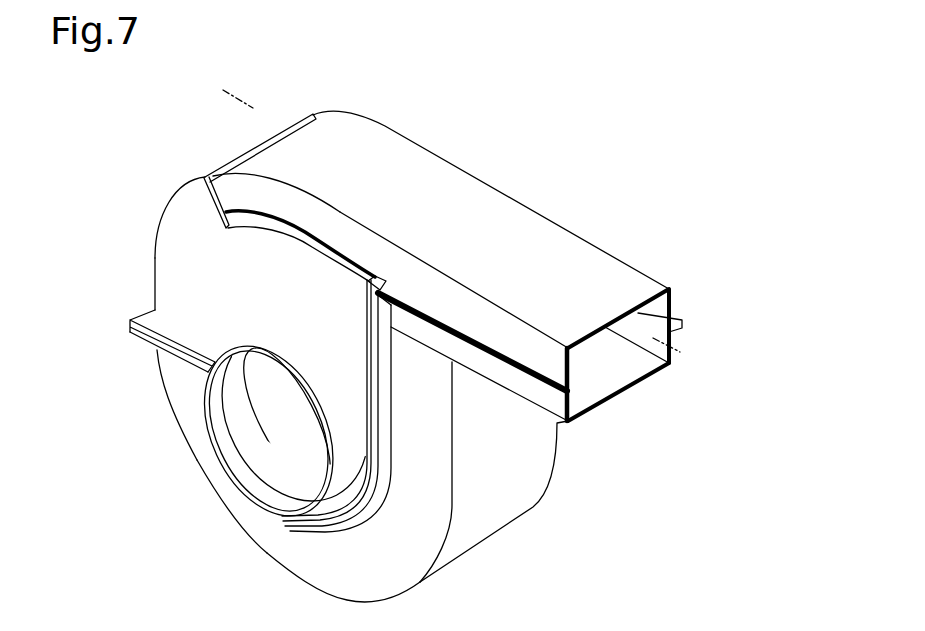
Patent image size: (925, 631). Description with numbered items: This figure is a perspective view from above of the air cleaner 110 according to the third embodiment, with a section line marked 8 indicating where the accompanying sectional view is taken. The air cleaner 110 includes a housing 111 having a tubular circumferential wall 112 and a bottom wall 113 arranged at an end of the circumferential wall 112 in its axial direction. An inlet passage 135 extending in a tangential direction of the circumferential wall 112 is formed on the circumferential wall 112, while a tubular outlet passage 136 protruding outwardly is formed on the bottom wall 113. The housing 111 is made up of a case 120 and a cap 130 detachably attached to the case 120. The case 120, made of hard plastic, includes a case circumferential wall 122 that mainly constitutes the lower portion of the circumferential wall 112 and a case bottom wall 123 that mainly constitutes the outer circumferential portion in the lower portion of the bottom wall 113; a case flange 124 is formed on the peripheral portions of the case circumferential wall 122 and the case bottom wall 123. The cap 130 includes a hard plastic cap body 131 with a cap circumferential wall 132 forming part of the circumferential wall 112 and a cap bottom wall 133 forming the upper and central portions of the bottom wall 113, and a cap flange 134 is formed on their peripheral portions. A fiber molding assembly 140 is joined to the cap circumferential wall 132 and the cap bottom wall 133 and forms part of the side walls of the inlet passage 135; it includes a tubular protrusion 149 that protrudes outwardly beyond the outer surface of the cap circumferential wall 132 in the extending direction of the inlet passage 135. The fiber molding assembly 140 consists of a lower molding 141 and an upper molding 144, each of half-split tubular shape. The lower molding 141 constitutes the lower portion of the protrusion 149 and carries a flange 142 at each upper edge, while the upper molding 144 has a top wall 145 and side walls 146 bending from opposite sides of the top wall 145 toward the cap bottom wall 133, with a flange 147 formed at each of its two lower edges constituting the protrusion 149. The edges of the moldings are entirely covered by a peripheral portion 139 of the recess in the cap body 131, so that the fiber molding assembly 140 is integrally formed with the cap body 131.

The section line VIII-VIII 8 is at (223, 90).
The air cleaner 110 is at (581, 141).
The housing 111 is at (58, 238).
The circumferential wall 112 is at (510, 498).
The bottom wall 113 is at (198, 427).
The case 120 is at (155, 405).
The case circumferential wall 122 is at (477, 518).
The case bottom wall 123 is at (297, 555).
The case flange 124 is at (143, 342).
The cap 130 is at (148, 255).
The cap body 131 is at (185, 190).
The cap circumferential wall 132 is at (173, 210).
The cap bottom wall 133 is at (157, 278).
The cap flange 134 is at (145, 317).
The inlet passage 135 is at (618, 369).
The outlet passage 136 is at (225, 462).
The peripheral portion 139 is at (320, 245).
The fiber molding assembly 140 is at (772, 231).
The lower molding 141 is at (676, 367).
The flange 142 is at (563, 427).
The upper molding 144 is at (665, 288).
The top wall 145 is at (460, 207).
The side walls 146 is at (450, 298).
The flange 147 is at (523, 367).
The tubular protrusion 149 is at (480, 377).